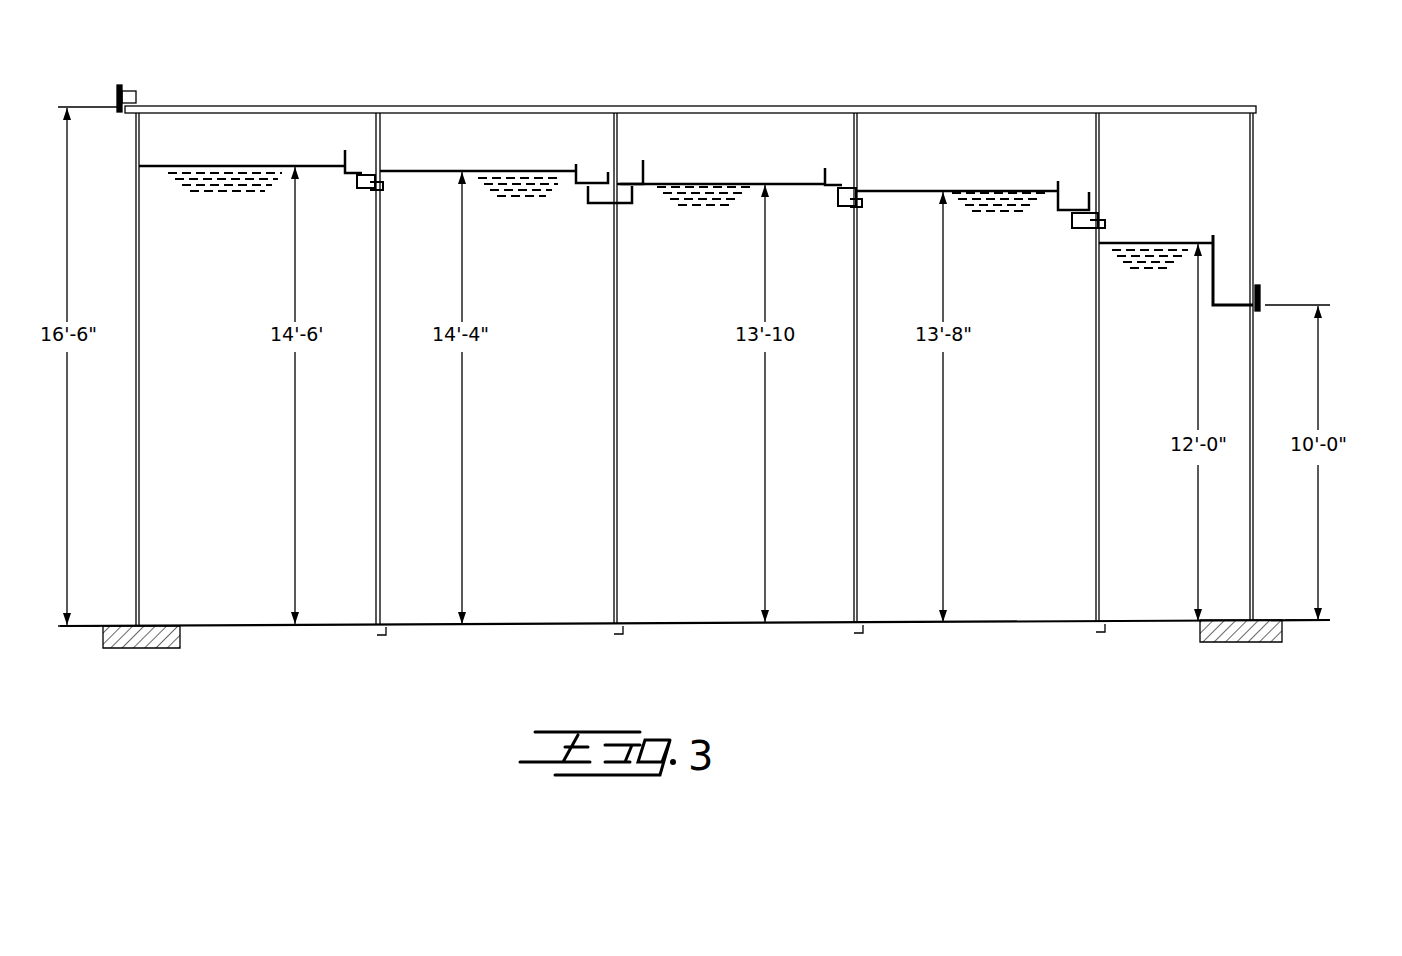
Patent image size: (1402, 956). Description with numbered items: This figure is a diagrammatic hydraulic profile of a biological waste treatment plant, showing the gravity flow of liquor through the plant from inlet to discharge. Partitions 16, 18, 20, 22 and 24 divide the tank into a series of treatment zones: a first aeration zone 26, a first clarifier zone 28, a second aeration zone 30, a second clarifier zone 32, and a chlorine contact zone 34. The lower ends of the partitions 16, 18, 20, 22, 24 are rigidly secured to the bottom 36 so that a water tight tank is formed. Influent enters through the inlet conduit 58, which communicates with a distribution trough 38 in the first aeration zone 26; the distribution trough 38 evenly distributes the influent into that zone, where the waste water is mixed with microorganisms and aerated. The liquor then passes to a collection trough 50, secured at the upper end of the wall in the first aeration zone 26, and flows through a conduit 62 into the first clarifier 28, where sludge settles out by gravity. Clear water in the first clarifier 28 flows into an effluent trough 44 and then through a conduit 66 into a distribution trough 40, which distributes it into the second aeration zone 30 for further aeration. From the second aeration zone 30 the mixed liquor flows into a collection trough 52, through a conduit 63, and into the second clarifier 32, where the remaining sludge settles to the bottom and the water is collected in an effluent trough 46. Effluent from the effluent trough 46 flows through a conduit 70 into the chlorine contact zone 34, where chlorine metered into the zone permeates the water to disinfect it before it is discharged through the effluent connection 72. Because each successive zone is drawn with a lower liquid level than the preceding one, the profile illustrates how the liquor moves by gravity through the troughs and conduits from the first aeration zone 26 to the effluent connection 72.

The partition 16 is at (380, 397).
The partition 18 is at (618, 435).
The partition 20 is at (858, 412).
The partition 22 is at (1099, 425).
The partition 24 is at (140, 425).
The first aeration zone 26 is at (233, 104).
The first clarifier zone 28 is at (485, 104).
The second aeration zone 30 is at (692, 104).
The second clarifier zone 32 is at (958, 104).
The chlorine contact zone 34 is at (1172, 104).
The bottom 36 is at (693, 627).
The distribution trough 38 is at (155, 168).
The distribution trough 40 is at (645, 190).
The effluent trough 44 is at (580, 185).
The effluent trough 46 is at (1060, 205).
The collection trough 50 is at (350, 173).
The collection trough 52 is at (832, 186).
The inlet conduit 58 is at (128, 93).
The conduit 62 is at (372, 192).
The conduit 63 is at (850, 195).
The conduit 66 is at (603, 205).
The conduit 70 is at (1082, 228).
The effluent connection 72 is at (1260, 290).